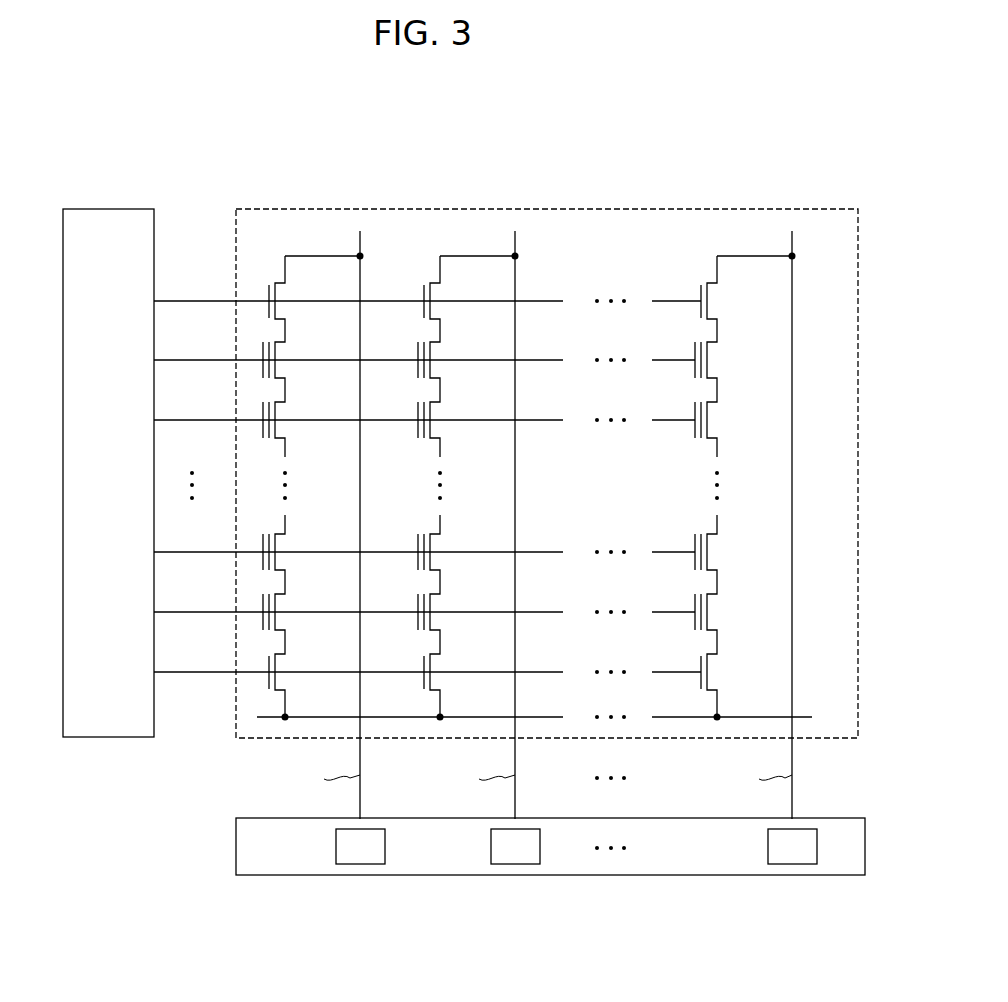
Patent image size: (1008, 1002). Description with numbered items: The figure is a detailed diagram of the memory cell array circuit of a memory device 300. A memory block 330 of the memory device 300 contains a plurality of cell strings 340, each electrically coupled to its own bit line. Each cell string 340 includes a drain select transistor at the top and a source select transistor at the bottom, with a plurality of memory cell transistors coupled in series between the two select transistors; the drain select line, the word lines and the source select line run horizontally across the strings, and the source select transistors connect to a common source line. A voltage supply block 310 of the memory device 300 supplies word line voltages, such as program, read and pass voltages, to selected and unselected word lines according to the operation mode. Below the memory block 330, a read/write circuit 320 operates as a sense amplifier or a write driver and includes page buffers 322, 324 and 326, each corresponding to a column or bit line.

The memory device 300 is at (838, 119).
The voltage supply block 310 is at (110, 208).
The read/write circuit 320 is at (236, 846).
The page buffer 322 is at (336, 846).
The page buffer 324 is at (491, 846).
The page buffer 326 is at (768, 846).
The memory block 330 is at (758, 208).
The cell string 340 is at (279, 248).